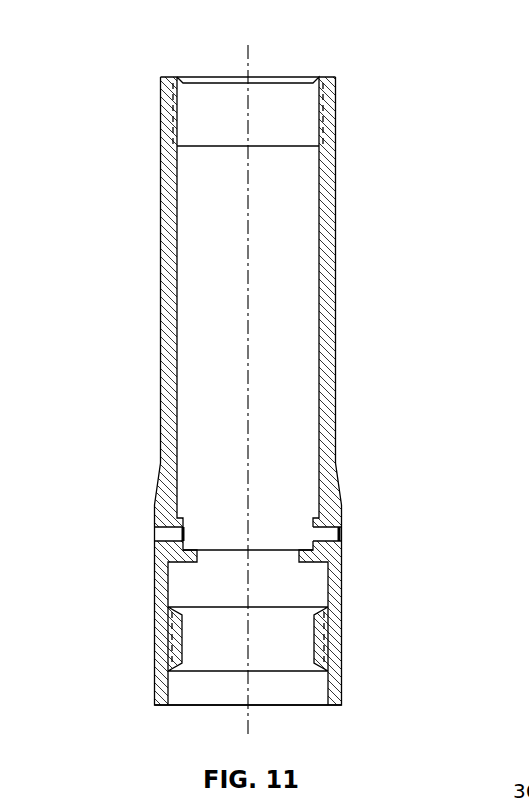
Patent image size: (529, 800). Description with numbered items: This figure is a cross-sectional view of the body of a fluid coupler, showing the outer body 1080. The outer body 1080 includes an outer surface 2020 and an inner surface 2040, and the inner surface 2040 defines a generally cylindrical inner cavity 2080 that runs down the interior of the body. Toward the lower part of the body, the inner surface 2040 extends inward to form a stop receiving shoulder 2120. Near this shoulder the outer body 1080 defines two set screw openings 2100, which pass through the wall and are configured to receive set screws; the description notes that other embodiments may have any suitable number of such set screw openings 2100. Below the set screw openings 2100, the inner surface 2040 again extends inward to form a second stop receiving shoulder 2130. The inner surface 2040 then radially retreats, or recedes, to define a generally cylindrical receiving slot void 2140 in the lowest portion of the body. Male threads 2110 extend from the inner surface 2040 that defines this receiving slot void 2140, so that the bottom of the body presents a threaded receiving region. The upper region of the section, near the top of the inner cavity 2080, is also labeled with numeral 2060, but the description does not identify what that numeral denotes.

The outer body 1080 is at (122, 193).
The outer surface 2020 is at (336, 113).
The inner surface 2040 is at (319, 411).
The internal thread 2060 is at (178, 100).
The inner cavity 2080 is at (302, 297).
The set screw openings 2100 is at (337, 533).
The male threads 2110 is at (302, 648).
The stop receiving shoulder 2120 is at (183, 525).
The second stop receiving shoulder 2130 is at (177, 556).
The receiving slot void 2140 is at (323, 633).